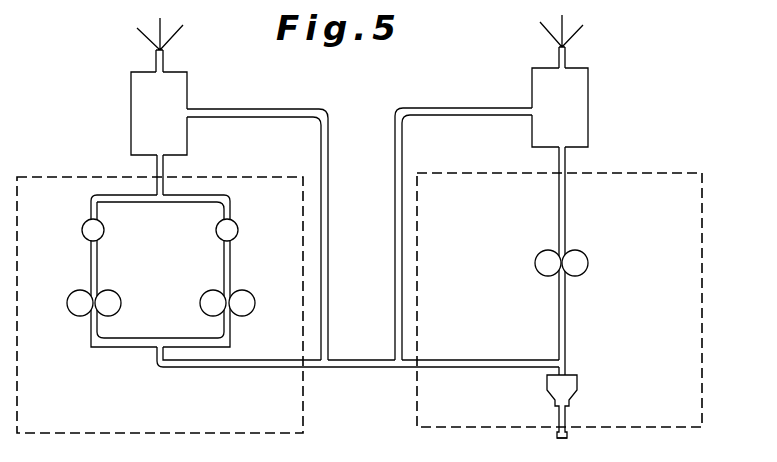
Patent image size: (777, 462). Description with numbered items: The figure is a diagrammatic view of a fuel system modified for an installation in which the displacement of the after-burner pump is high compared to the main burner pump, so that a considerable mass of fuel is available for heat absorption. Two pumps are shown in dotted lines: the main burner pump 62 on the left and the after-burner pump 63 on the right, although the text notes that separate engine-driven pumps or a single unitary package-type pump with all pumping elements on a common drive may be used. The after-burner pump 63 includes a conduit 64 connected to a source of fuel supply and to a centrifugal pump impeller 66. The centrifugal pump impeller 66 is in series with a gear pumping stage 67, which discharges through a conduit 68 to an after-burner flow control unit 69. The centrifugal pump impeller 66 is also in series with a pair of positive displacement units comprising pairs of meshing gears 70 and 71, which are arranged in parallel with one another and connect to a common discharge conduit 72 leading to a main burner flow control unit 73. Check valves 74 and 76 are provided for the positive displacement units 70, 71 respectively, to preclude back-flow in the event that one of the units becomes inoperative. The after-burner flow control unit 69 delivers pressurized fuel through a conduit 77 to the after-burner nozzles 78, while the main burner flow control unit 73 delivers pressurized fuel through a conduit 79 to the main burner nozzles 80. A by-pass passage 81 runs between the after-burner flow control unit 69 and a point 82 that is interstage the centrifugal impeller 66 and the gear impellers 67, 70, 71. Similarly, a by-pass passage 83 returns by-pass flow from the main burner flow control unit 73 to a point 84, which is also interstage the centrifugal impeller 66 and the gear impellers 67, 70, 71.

The main burner pump 62 is at (148, 433).
The after-burner pump 63 is at (455, 430).
The conduit 64 is at (569, 434).
The centrifugal pump impeller 66 is at (560, 386).
The gear pumping stage 67 is at (551, 274).
The conduit 68 is at (565, 196).
The after-burner flow control unit 69 is at (588, 96).
The positive displacement unit 70 is at (108, 302).
The positive displacement unit 71 is at (241, 302).
The common discharge conduit 72 is at (160, 168).
The main burner flow control unit 73 is at (131, 106).
The check valve 74 is at (104, 227).
The check valve 76 is at (216, 229).
The conduit 77 is at (566, 58).
The after-burner nozzles 78 is at (566, 47).
The conduit 79 is at (164, 62).
The main burner nozzles 80 is at (156, 50).
The by-pass passage 81 is at (403, 106).
The interstage point 82 is at (413, 353).
The by-pass passage 83 is at (330, 108).
The interstage point 84 is at (337, 352).